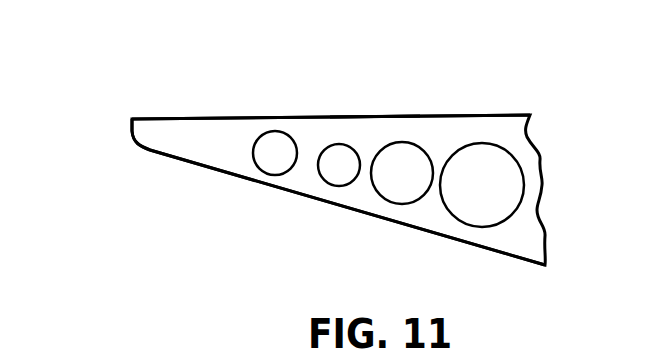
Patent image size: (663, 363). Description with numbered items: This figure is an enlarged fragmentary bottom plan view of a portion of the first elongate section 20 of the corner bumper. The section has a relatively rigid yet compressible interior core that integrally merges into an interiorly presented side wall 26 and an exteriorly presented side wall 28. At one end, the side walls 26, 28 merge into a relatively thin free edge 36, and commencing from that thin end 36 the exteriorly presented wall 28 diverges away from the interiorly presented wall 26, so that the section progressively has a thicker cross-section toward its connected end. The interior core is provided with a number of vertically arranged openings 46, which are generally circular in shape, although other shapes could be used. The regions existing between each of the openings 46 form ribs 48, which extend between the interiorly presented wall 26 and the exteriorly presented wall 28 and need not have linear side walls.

The first elongate section 20 is at (282, 104).
The interiorly presented side wall 26 is at (445, 115).
The exteriorly presented side wall 28 is at (365, 212).
The free edge 36 is at (132, 132).
The openings 46 is at (337, 173).
The ribs 48 is at (363, 142).